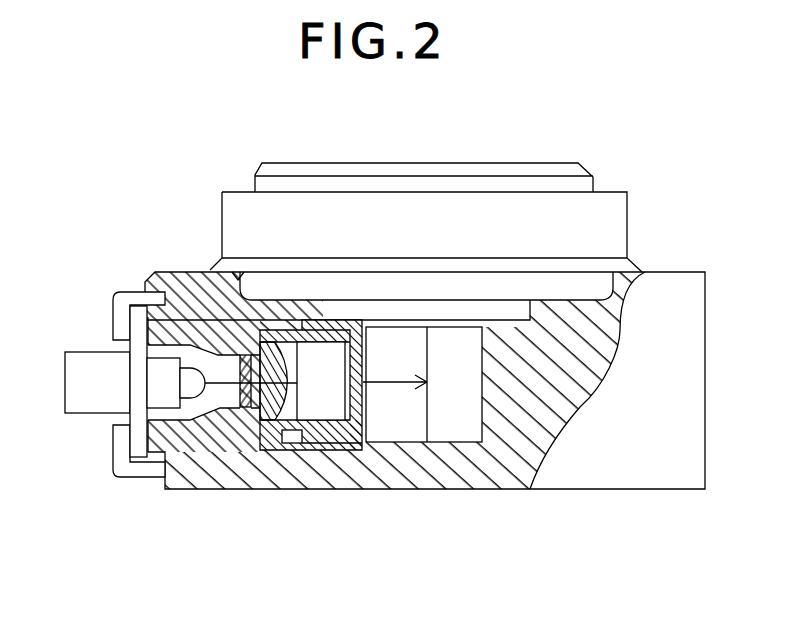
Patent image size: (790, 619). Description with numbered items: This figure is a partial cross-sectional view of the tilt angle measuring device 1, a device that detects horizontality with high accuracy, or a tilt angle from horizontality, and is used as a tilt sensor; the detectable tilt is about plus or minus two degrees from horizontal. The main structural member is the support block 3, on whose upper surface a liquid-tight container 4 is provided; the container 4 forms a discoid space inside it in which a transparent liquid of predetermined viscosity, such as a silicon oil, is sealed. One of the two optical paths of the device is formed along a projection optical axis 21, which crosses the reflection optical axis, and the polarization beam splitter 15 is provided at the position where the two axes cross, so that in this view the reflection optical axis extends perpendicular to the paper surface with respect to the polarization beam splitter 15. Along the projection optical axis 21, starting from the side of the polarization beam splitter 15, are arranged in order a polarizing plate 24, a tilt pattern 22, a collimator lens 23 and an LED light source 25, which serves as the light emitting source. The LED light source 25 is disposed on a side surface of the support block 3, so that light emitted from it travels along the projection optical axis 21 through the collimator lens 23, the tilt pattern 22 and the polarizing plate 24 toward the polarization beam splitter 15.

The tilt angle measuring device 1 is at (200, 117).
The support block 3 is at (190, 273).
The liquid-tight container 4 is at (562, 163).
The polarization beam splitter 15 is at (417, 443).
The projection optical axis 21 is at (332, 383).
The tilt pattern 22 is at (312, 407).
The collimator lens 23 is at (268, 425).
The polarizing plate 24 is at (357, 397).
The LED light source 25 is at (87, 352).